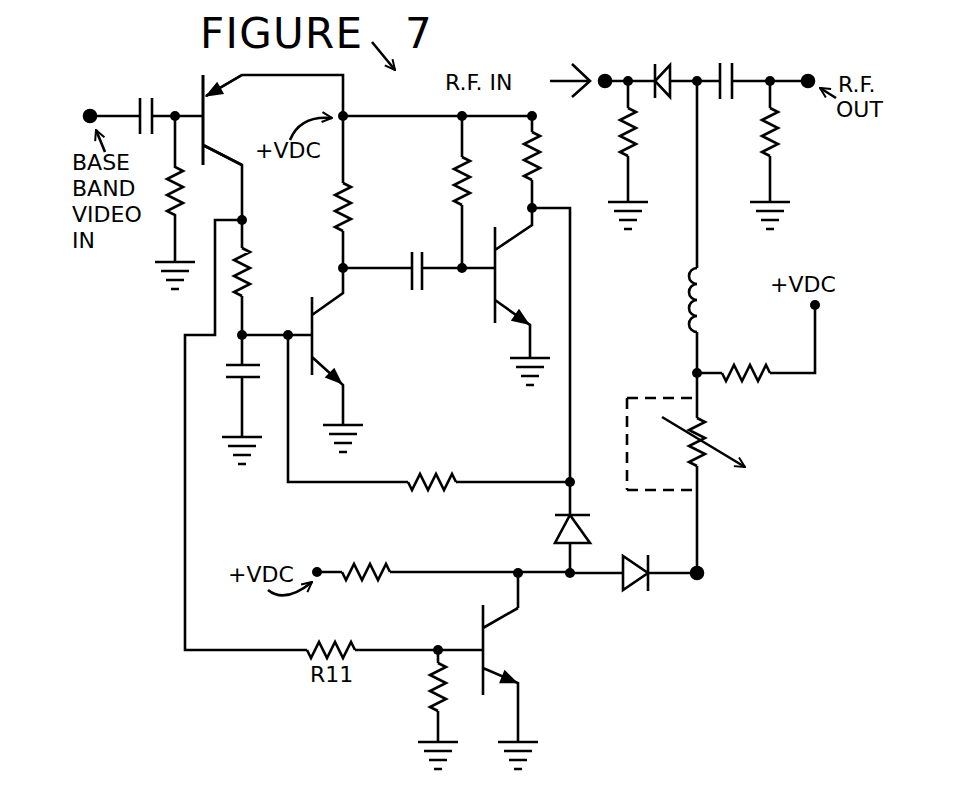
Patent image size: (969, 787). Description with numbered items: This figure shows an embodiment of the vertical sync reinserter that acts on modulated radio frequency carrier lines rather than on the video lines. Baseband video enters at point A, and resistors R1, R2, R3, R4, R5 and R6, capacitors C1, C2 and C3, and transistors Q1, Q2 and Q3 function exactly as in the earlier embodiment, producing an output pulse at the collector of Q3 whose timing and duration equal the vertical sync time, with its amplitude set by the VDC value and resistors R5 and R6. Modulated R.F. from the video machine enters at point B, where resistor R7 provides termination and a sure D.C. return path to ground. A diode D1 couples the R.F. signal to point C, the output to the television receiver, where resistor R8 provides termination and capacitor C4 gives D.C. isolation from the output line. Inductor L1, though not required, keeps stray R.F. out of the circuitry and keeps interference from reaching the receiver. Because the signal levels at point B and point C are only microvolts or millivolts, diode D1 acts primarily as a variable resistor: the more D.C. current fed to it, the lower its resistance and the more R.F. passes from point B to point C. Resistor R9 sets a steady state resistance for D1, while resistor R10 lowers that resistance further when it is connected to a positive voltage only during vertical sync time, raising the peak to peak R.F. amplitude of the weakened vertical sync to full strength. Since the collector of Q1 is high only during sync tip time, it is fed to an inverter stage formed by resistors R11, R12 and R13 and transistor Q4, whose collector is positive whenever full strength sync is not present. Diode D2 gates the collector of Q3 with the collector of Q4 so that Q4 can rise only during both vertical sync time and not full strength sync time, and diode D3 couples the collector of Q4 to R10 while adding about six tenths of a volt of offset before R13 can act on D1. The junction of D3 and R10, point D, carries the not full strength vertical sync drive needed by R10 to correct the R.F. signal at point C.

The point A is at (88, 108).
The point B is at (603, 92).
The point C is at (814, 94).
The point D is at (707, 582).
The capacitor C1 is at (154, 104).
The capacitor C2 is at (252, 391).
The capacitor C3 is at (412, 289).
The capacitor C4 is at (737, 96).
The resistor R1 is at (186, 176).
The resistor R2 is at (260, 272).
The resistor R3 is at (324, 207).
The resistor R4 is at (441, 181).
The resistor R5 is at (544, 156).
The resistor R6 is at (432, 468).
The resistor R7 is at (642, 150).
The resistor R8 is at (760, 148).
The resistor R9 is at (795, 408).
The resistor R10 is at (690, 452).
The resistor R11 is at (331, 664).
The resistor R12 is at (454, 694).
The resistor R13 is at (423, 532).
The transistor Q1 is at (223, 120).
The transistor Q2 is at (332, 346).
The transistor Q3 is at (515, 283).
The transistor Q4 is at (505, 673).
The diode D1 is at (666, 100).
The diode D2 is at (553, 531).
The diode D3 is at (641, 598).
The inductor L1 is at (684, 282).